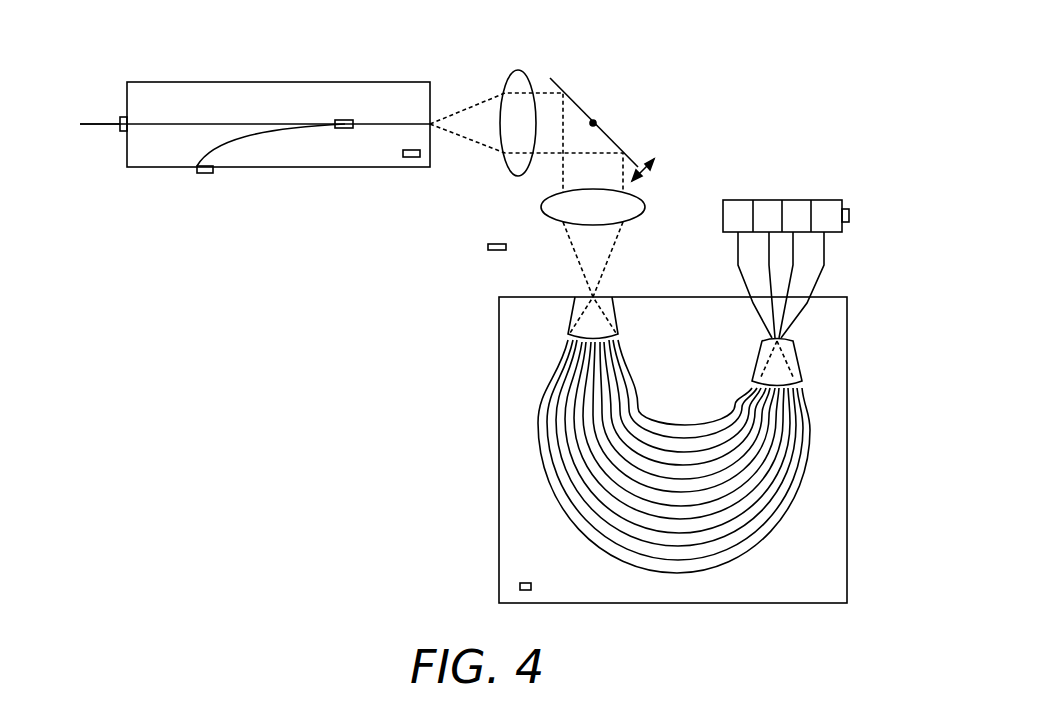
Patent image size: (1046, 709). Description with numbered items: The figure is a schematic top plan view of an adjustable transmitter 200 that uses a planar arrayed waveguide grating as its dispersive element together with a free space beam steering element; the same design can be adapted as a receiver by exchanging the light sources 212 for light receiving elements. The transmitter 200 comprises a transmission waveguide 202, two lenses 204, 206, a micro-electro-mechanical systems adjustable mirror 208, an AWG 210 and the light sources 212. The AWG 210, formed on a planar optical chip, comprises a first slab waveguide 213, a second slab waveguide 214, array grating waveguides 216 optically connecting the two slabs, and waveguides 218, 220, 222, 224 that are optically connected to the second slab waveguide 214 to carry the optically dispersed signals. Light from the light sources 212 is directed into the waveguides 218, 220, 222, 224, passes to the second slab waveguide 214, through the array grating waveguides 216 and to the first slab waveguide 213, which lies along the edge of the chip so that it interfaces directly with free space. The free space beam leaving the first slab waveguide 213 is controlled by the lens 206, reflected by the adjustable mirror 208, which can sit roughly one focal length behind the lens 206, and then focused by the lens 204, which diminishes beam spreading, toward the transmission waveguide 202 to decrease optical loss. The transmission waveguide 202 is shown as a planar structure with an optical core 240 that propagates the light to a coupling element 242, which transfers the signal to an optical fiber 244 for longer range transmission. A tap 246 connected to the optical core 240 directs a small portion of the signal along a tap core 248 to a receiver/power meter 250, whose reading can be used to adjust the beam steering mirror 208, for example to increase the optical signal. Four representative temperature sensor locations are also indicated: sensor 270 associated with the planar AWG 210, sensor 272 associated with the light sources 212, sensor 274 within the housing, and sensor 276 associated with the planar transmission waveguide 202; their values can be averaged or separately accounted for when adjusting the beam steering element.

The transmitter 200 is at (370, 309).
The transmission waveguide 202 is at (285, 167).
The lens 204 is at (510, 85).
The lens 206 is at (633, 218).
The MEMs adjustable mirror 208 is at (589, 110).
The AWG 210 is at (513, 500).
The light sources 212 is at (820, 200).
The first slab waveguide 213 is at (570, 322).
The second slab waveguide 214 is at (803, 368).
The array grating waveguides 216 is at (752, 548).
The waveguide 218 is at (825, 237).
The waveguide 220 is at (794, 265).
The waveguide 222 is at (764, 268).
The waveguide 224 is at (737, 253).
The optical core 240 is at (197, 124).
The coupling element 242 is at (120, 122).
The optical fiber 244 is at (100, 128).
The tap 246 is at (347, 119).
The tap core 248 is at (255, 133).
The receiver/power meter 250 is at (200, 174).
The temperature sensor 270 is at (518, 586).
The temperature sensor 272 is at (850, 215).
The temperature sensor 274 is at (498, 252).
The temperature sensor 276 is at (412, 158).